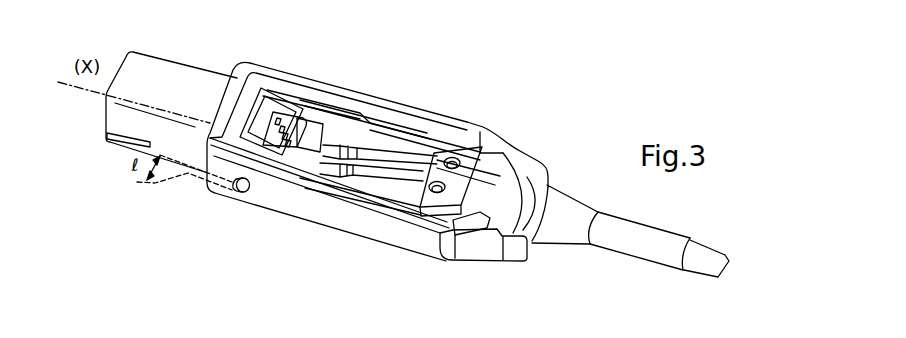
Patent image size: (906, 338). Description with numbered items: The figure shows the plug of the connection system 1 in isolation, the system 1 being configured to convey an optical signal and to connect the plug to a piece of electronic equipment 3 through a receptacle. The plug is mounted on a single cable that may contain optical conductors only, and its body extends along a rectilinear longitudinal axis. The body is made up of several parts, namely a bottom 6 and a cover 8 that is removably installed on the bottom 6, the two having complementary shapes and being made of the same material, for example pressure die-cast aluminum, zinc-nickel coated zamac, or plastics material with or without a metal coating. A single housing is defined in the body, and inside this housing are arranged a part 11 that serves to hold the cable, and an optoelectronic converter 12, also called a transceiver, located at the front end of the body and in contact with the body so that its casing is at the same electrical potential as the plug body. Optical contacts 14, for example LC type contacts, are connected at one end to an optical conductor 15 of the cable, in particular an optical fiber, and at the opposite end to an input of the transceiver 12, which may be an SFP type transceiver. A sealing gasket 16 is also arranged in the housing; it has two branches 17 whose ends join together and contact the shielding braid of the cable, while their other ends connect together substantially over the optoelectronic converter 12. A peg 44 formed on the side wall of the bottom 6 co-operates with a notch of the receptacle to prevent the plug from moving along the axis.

The connection system 1 is at (526, 101).
The piece of electronic equipment 3 is at (151, 63).
The bottom 6 is at (308, 200).
The cover 8 is at (317, 93).
The part 11 is at (503, 193).
The optoelectronic converter 12 is at (265, 112).
The optical contacts 14 is at (330, 137).
The optical conductor 15 is at (377, 177).
The sealing gasket 16 is at (518, 160).
The branches 17 is at (422, 143).
The peg 44 is at (236, 190).